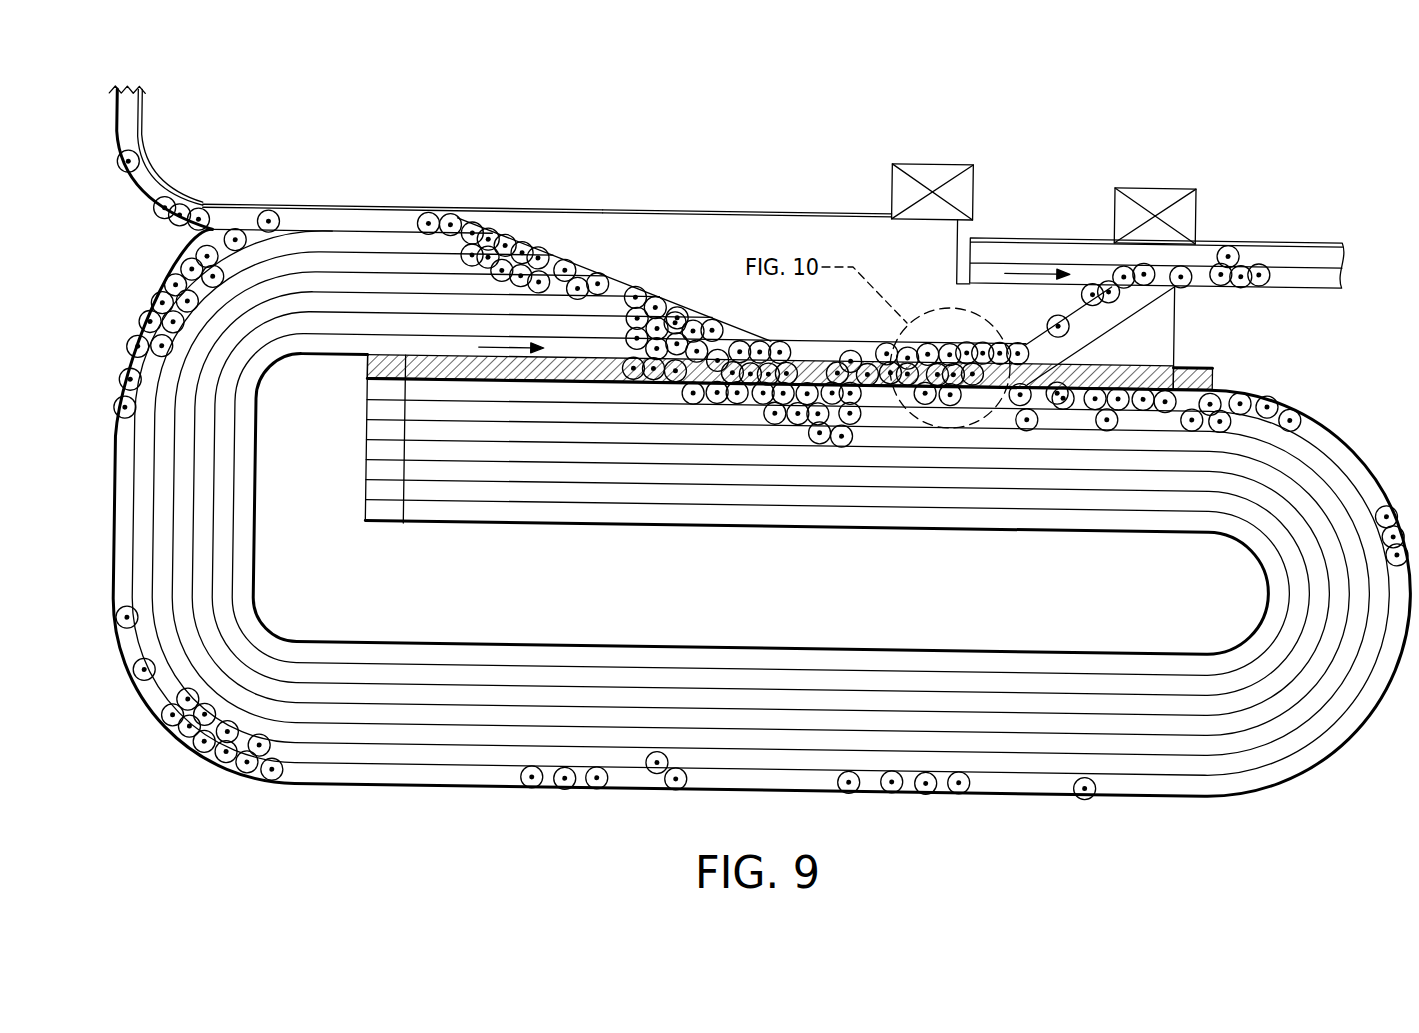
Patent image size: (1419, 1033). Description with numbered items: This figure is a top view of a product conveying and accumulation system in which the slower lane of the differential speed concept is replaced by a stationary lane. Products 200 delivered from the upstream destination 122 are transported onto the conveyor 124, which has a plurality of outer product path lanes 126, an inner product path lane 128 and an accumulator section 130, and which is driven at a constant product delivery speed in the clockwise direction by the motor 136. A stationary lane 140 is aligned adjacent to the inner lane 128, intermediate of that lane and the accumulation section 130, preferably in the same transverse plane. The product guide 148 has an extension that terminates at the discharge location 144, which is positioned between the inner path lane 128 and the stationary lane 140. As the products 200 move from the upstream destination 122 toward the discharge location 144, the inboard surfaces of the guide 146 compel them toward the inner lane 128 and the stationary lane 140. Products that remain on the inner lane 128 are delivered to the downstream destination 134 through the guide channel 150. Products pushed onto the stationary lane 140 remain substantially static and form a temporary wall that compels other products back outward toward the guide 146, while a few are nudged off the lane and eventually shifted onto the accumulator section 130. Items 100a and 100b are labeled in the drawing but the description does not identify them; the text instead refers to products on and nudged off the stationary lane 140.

The first article 100a is at (930, 343).
The second article 100b is at (925, 398).
The upstream destination 122 is at (136, 123).
The conveyor 124 is at (383, 265).
The outer product path lanes 126 is at (340, 243).
The inner product path lane 128 is at (610, 350).
The accumulator section 130 is at (1302, 495).
The downstream destination 134 is at (1306, 252).
The motor 136 is at (933, 170).
The stationary lane 140 is at (1210, 375).
The discharge location 144 is at (968, 352).
The guide 146 is at (845, 233).
The product guide 148 is at (1148, 325).
The guide channel 150 is at (1093, 290).
The products 200 is at (184, 204).